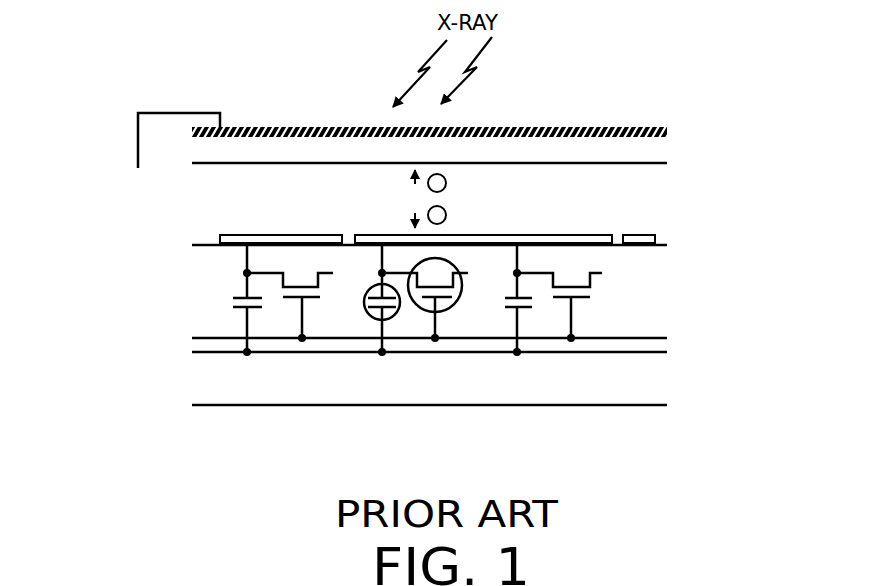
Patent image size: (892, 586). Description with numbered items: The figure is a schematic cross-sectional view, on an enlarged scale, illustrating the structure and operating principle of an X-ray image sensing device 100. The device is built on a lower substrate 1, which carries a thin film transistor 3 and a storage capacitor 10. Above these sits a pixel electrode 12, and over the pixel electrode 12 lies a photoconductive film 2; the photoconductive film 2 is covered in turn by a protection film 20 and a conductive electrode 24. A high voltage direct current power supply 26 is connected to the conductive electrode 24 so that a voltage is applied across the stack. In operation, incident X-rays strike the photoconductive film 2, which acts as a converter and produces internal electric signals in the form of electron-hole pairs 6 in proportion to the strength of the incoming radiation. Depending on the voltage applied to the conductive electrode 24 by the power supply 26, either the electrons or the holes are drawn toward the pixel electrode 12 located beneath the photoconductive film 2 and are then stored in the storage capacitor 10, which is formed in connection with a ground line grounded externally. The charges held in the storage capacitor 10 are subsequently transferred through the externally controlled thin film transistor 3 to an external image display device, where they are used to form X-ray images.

The X-ray image sensing device 100 is at (706, 107).
The conductive electrode 24 is at (553, 128).
The protection film 20 is at (597, 146).
The photoconductive film 2 is at (638, 197).
The electron-hole pairs 6 is at (446, 186).
The pixel electrode 12 is at (367, 236).
The high voltage direct current power supply 26 is at (120, 185).
The storage capacitor 10 is at (369, 314).
The thin film transistor 3 is at (453, 305).
The lower substrate 1 is at (442, 392).